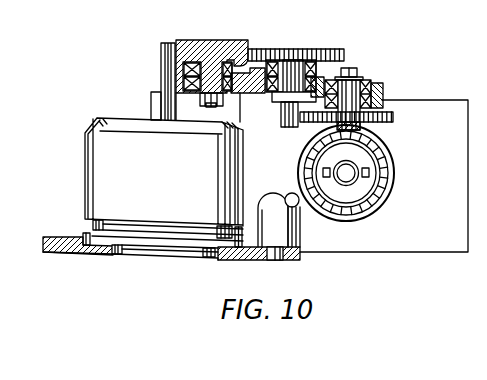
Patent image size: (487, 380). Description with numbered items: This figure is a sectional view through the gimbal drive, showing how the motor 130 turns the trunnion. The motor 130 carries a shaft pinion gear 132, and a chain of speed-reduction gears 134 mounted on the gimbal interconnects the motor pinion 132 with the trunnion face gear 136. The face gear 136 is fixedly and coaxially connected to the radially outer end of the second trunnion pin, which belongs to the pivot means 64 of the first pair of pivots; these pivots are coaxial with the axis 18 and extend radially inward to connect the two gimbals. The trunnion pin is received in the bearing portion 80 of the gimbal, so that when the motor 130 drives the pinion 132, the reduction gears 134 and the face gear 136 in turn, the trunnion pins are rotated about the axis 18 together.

The axis 18 is at (357, 208).
The pivot means 64 is at (298, 209).
The bearing portion 80 is at (347, 214).
The motor 130 is at (211, 189).
The shaft pinion gear 132 is at (161, 68).
The speed-reduction gears 134 is at (249, 49).
The face gear 136 is at (384, 177).